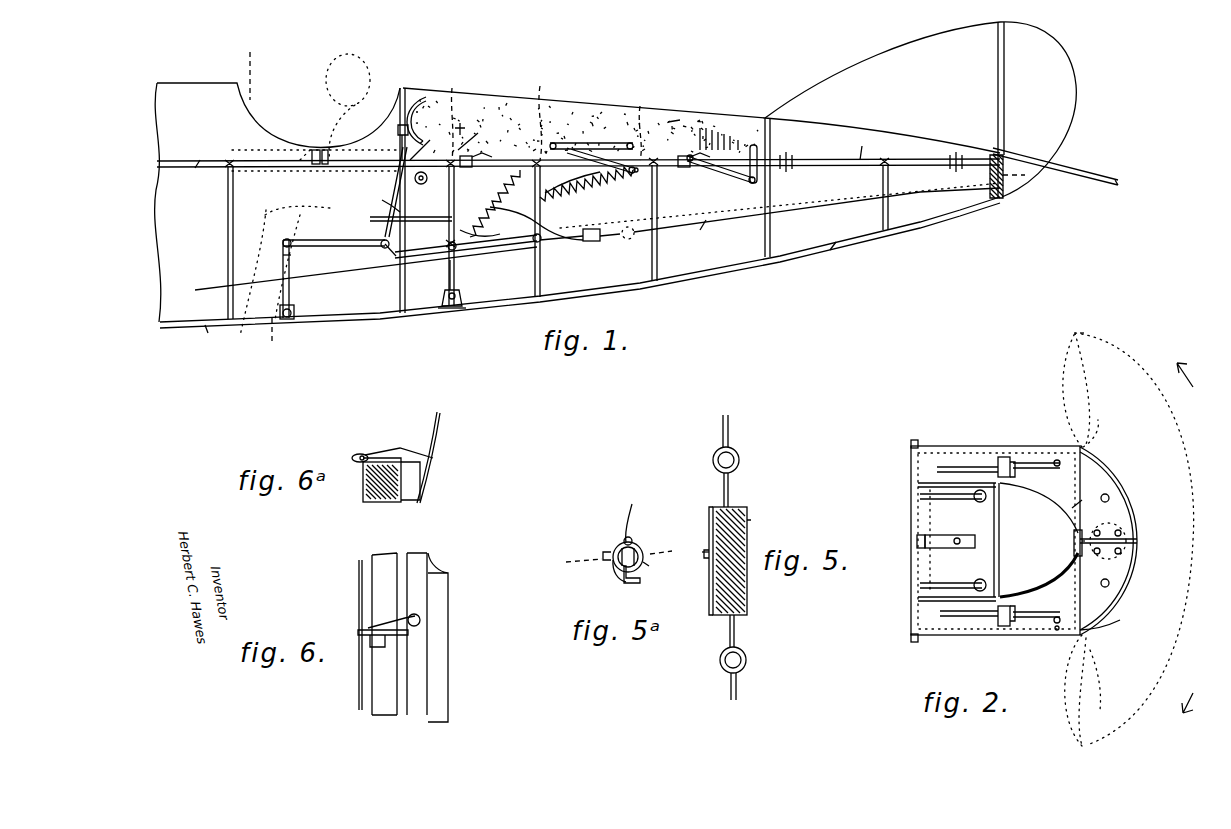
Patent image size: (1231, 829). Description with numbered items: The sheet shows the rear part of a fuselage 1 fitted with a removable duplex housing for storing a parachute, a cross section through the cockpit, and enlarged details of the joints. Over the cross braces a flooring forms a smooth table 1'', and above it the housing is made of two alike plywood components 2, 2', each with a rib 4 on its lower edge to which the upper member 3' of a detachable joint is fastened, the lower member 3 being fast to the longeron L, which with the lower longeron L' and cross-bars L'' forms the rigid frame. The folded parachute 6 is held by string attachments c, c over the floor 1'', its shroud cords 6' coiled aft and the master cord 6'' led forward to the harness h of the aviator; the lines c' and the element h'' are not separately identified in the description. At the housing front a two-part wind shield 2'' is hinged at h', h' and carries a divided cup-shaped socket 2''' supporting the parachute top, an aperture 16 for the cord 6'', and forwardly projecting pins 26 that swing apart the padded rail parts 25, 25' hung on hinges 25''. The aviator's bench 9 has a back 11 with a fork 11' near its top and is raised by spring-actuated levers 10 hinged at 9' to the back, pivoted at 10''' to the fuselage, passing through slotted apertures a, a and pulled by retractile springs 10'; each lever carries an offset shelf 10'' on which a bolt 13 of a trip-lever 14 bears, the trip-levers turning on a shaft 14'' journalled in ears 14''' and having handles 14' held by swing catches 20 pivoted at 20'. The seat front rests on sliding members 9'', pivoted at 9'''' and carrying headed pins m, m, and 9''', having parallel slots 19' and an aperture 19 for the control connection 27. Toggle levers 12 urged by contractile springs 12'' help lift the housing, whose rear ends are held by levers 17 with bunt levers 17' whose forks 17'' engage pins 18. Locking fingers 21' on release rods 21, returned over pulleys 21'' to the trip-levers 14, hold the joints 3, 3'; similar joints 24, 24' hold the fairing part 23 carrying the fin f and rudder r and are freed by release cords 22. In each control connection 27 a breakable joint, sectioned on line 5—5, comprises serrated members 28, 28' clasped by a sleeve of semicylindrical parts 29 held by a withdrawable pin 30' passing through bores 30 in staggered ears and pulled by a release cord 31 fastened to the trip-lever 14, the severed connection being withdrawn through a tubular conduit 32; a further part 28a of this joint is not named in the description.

In FIG. 1, the fuselage 1 is at (577, 205).
In FIG. 2, the fuselage 1 is at (986, 540).
In FIG. 2, the floor 1'' is at (1071, 501).
In FIG. 1, the housing component 2 is at (262, 199).
In FIG. 2, the housing component 2 is at (1134, 539).
In FIG. 6, the housing component 2 is at (449, 637).
In FIG. 6A, the housing component 2 is at (432, 457).
In FIG. 2, the housing component 2' is at (1113, 614).
In FIG. 1, the wind shield 2'' is at (395, 189).
In FIG. 2, the wind shield 2'' is at (1108, 541).
In FIG. 1, the cup-shaped socket 2''' is at (420, 104).
In FIG. 2, the cup-shaped socket 2''' is at (1121, 539).
In FIG. 1, the lower joint member 3 is at (572, 173).
In FIG. 6A, the lower joint member 3 is at (374, 444).
In FIG. 1, the upper joint member 3' is at (591, 172).
In FIG. 6, the upper joint member 3' is at (420, 633).
In FIG. 6A, the upper joint member 3' is at (399, 442).
In FIG. 6, the rib 4 is at (417, 634).
In FIG. 6A, the rib 4 is at (418, 485).
In FIG. 5, the section line 5 is at (707, 556).
In FIG. 5A, the section line 5 is at (616, 558).
In FIG. 1, the folded parachute 6 is at (587, 110).
In FIG. 1, the shroud cords 6' is at (703, 119).
In FIG. 1, the master cord 6'' is at (469, 140).
In FIG. 1, the aviator's bench 9 is at (334, 231).
In FIG. 2, the aviator's bench 9 is at (1005, 540).
In FIG. 1, the hinge joint 9' is at (373, 251).
In FIG. 1, the supporting member 9'' is at (304, 279).
In FIG. 1, the supporting member 9''' is at (268, 257).
In FIG. 2, the supporting member 9''' is at (945, 552).
In FIG. 1, the pivot 9'''' is at (305, 308).
In FIG. 2, the pivot 9'''' is at (908, 545).
In FIG. 1, the raising lever 10 is at (466, 253).
In FIG. 2, the raising lever 10 is at (982, 543).
In FIG. 1, the retractile spiral spring 10' is at (489, 224).
In FIG. 1, the offset shelf 10'' is at (465, 255).
In FIG. 1, the pivot bearing 10''' is at (552, 251).
In FIG. 1, the bench back 11 is at (384, 192).
In FIG. 2, the bench back 11 is at (1039, 573).
In FIG. 2, the fork 11' is at (1039, 508).
In FIG. 1, the toggle lever 12 is at (586, 187).
In FIG. 1, the contractile spring 12'' is at (619, 185).
In FIG. 1, the bolt 13 is at (454, 238).
In FIG. 1, the trip-lever 14 is at (462, 275).
In FIG. 2, the trip-lever 14 is at (960, 545).
In FIG. 1, the handle 14' is at (396, 214).
In FIG. 2, the handle 14' is at (1012, 524).
In FIG. 1, the oscillatable shaft 14'' is at (460, 309).
In FIG. 2, the oscillatable shaft 14'' is at (907, 540).
In FIG. 1, the ears 14''' is at (445, 318).
In FIG. 2, the aperture 16 is at (1076, 560).
In FIG. 1, the lever 17 is at (654, 170).
In FIG. 1, the bunt lever 17' is at (714, 175).
In FIG. 1, the fork 17'' is at (725, 186).
In FIG. 1, the pin 18 is at (693, 156).
In FIG. 2, the aperture 19 is at (951, 573).
In FIG. 2, the slots 19' is at (951, 506).
In FIG. 1, the swing catch 20 is at (376, 199).
In FIG. 2, the swing catch 20 is at (1046, 543).
In FIG. 2, the pivot 20' is at (1058, 639).
In FIG. 1, the release rod 21 is at (499, 203).
In FIG. 6, the release rod 21 is at (347, 635).
In FIG. 6A, the release rod 21 is at (348, 452).
In FIG. 6, the locking finger 21' is at (370, 629).
In FIG. 6A, the locking finger 21' is at (353, 469).
In FIG. 1, the pulley 21'' is at (427, 187).
In FIG. 1, the release cord 22 is at (860, 166).
In FIG. 1, the fairing part 23 is at (801, 187).
In FIG. 1, the joint 24 is at (870, 163).
In FIG. 1, the joint 24' is at (912, 176).
In FIG. 1, the padded rail part 25 is at (347, 151).
In FIG. 2, the padded rail part 25 is at (1090, 358).
In FIG. 2, the padded rail part 25' is at (1109, 680).
In FIG. 1, the hinge 25'' is at (304, 153).
In FIG. 2, the hinge 25'' is at (1107, 530).
In FIG. 1, the pin 26 is at (395, 142).
In FIG. 2, the pin 26 is at (1109, 498).
In FIG. 1, the control connection 27 is at (360, 266).
In FIG. 2, the control connection 27 is at (950, 533).
In FIG. 5, the control connection 27 is at (740, 460).
In FIG. 1, the serrated member 28 is at (587, 248).
In FIG. 5, the serrated member 28 is at (724, 560).
In FIG. 5A, the serrated member 28 is at (614, 557).
In FIG. 5, the serrated member 28' is at (740, 560).
In FIG. 5A, the serrated member 28' is at (647, 558).
In FIG. 5A, the turnbuckle lug 28a is at (607, 521).
In FIG. 5, the sleeve part 29 is at (712, 524).
In FIG. 5A, the sleeve part 29 is at (618, 576).
In FIG. 5A, the bore 30 is at (641, 531).
In FIG. 5A, the withdrawable pin 30' is at (620, 541).
In FIG. 1, the release cord 31 is at (536, 222).
In FIG. 1, the tubular conduit 32 is at (688, 237).
In FIG. 1, the longeron L is at (864, 146).
In FIG. 6, the longeron L is at (385, 653).
In FIG. 6A, the longeron L is at (382, 494).
In FIG. 1, the lower longeron L' is at (514, 251).
In FIG. 1, the cross-bar L'' is at (425, 142).
In FIG. 2, the slotted aperture a is at (1001, 540).
In FIG. 1, the string attachment c is at (538, 121).
In FIG. 1, the covering seam c' is at (545, 112).
In FIG. 1, the fin f is at (882, 70).
In FIG. 1, the rudder r is at (1055, 110).
In FIG. 1, the harness h is at (316, 195).
In FIG. 2, the hinge h' is at (1098, 539).
In FIG. 2, the hinge h'' is at (1118, 528).
In FIG. 1, the pin m is at (280, 244).
In FIG. 2, the pin m is at (977, 540).